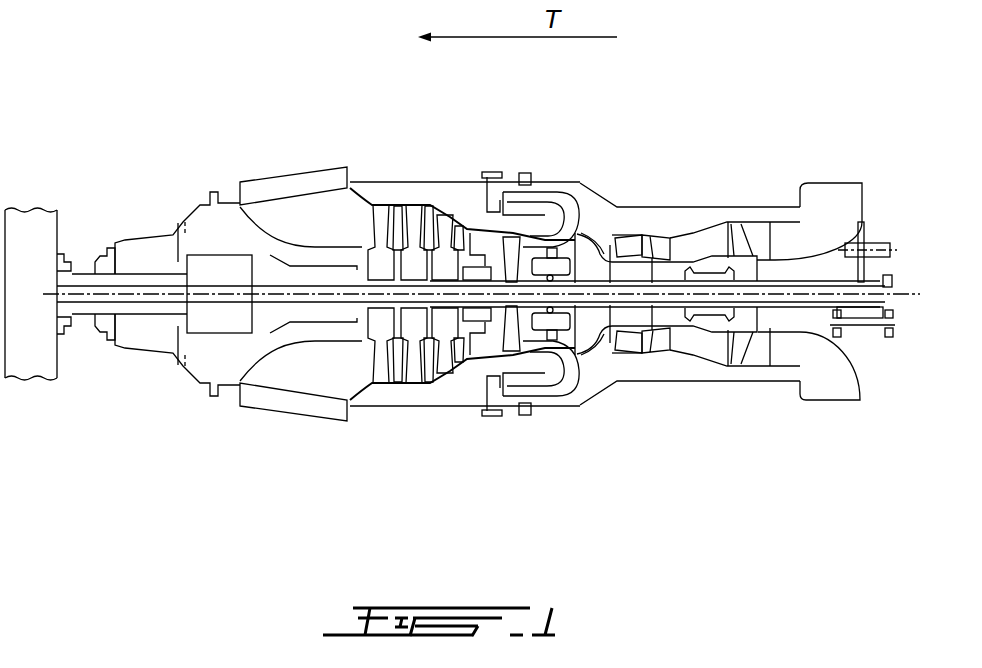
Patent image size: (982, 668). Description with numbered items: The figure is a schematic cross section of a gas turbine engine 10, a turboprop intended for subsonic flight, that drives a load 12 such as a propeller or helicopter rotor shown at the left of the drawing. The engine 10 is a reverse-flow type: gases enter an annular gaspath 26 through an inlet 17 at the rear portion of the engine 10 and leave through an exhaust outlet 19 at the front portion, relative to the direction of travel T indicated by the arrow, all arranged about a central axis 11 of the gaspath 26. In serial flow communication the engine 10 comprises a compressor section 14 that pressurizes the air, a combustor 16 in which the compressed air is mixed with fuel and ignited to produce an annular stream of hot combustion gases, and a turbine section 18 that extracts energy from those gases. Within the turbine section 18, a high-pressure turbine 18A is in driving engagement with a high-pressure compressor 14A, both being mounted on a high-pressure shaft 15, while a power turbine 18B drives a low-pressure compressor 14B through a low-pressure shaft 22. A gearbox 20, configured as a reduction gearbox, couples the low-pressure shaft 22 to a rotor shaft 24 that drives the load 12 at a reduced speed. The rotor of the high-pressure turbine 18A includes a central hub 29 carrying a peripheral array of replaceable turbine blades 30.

The gas turbine engine 10 is at (812, 78).
The central axis 11 is at (909, 296).
The load 12 is at (32, 364).
The compressor section 14 is at (689, 214).
The high-pressure compressor 14A is at (592, 343).
The low-pressure compressor 14B is at (757, 350).
The high-pressure shaft 15 is at (587, 283).
The combustor 16 is at (543, 200).
The inlet 17 is at (856, 170).
The turbine section 18 is at (446, 196).
The high-pressure turbine 18A is at (514, 318).
The power turbine 18B is at (447, 365).
The exhaust outlet 19 is at (294, 154).
The gearbox 20 is at (220, 333).
The low-pressure shaft 22 is at (302, 283).
The rotor shaft 24 is at (131, 316).
The annular gaspath 26 is at (680, 344).
The central hub 29 is at (597, 348).
The turbine blades 30 is at (518, 332).